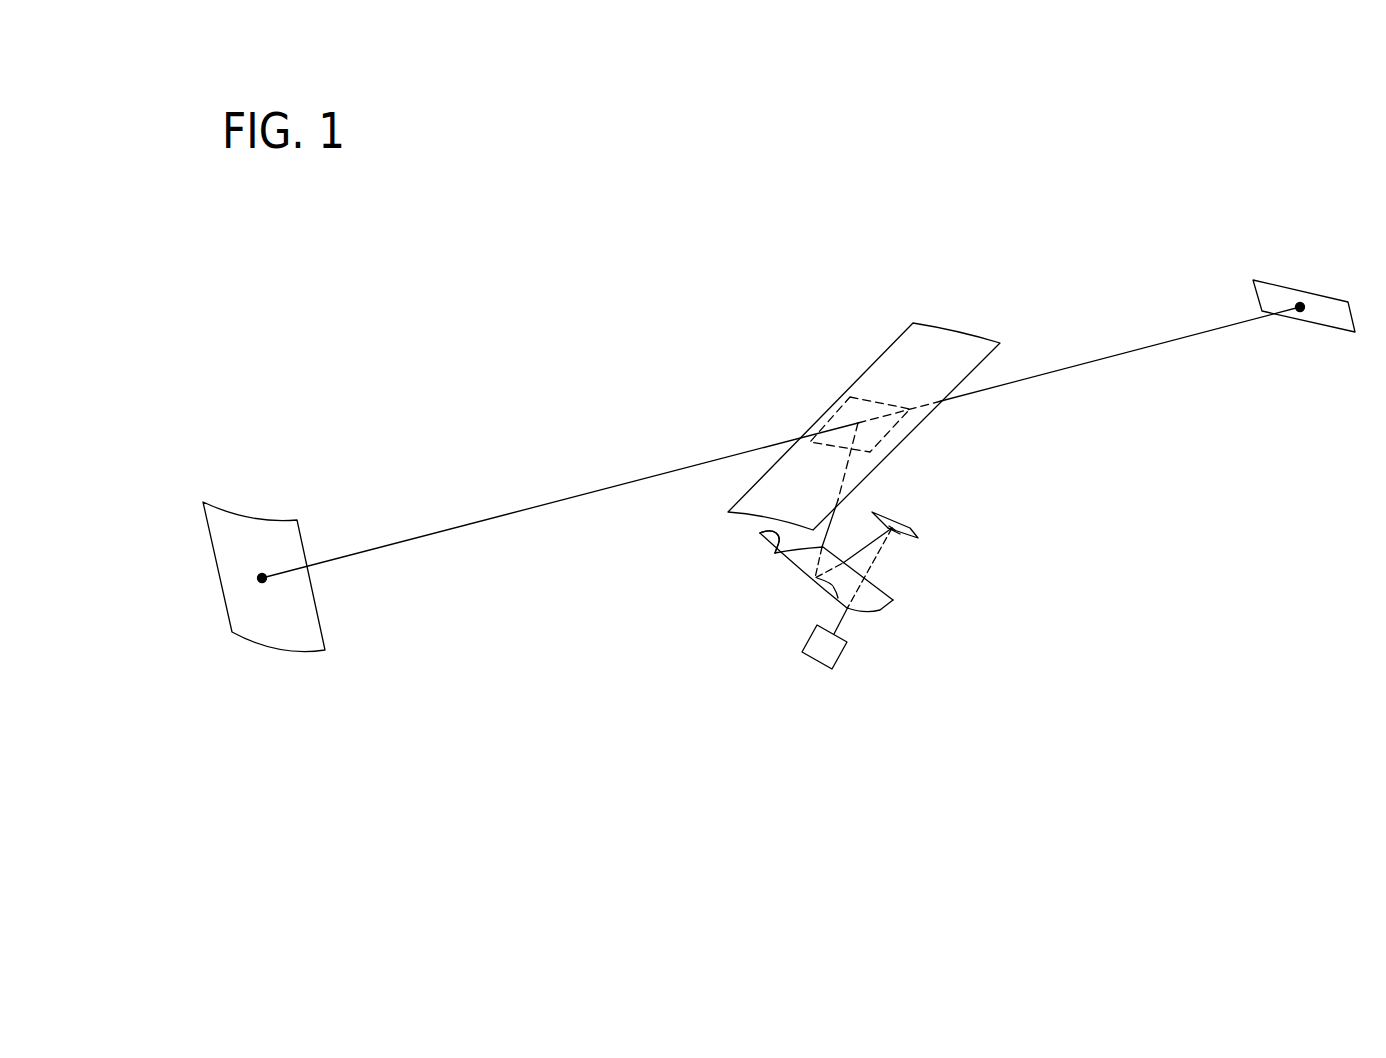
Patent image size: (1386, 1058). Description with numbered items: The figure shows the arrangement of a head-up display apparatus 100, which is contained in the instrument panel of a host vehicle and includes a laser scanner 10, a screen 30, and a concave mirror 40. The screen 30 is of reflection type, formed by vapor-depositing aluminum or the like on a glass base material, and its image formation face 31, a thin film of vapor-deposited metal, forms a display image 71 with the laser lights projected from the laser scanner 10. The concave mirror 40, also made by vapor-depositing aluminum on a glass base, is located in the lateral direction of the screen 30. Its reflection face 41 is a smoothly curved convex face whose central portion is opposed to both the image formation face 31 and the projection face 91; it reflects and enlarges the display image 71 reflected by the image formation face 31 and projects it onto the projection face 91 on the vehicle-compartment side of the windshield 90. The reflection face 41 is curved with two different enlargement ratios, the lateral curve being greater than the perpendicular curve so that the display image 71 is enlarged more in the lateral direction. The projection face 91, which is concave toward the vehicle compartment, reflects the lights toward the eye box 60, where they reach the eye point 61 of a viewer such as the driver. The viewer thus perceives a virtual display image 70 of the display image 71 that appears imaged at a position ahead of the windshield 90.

The laser scanner 10 is at (840, 667).
The screen 30 is at (902, 524).
The image formation face 31 is at (897, 537).
The concave mirror 40 is at (893, 600).
The reflection face 41 is at (760, 533).
The eye box 60 is at (1272, 278).
The eye point 61 is at (1300, 303).
The virtual display image 70 is at (257, 512).
The display image 71 is at (898, 532).
The windshield 90 is at (865, 372).
The projection face 91 is at (886, 437).
The head-up display apparatus 100 is at (772, 615).